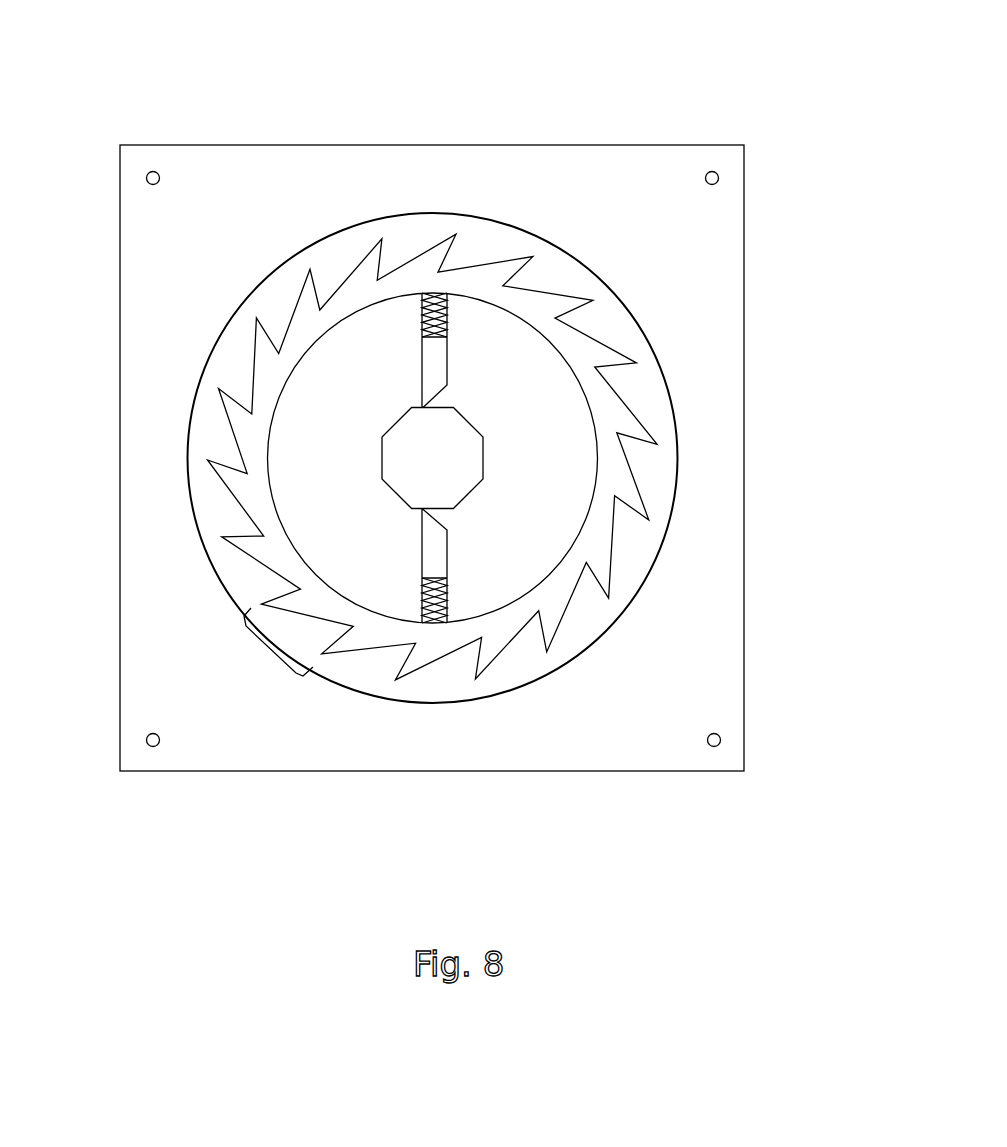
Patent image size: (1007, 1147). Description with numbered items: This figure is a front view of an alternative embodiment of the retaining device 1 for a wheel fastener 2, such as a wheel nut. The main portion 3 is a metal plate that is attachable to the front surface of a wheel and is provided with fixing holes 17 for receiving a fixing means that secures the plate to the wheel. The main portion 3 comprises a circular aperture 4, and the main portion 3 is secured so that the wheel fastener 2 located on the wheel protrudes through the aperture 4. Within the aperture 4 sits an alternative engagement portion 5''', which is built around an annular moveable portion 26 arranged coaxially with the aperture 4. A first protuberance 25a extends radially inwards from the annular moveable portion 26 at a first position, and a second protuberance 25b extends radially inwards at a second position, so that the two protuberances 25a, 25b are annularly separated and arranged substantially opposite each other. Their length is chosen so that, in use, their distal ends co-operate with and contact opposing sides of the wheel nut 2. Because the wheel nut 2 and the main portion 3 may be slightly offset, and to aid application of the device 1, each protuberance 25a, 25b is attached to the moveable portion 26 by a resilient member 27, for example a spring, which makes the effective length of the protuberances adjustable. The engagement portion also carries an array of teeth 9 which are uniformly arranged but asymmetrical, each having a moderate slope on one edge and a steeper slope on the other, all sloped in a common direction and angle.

The retaining device 1 is at (474, 437).
The wheel fastener 2 is at (447, 455).
The main portion 3 is at (470, 175).
The circular aperture 4 is at (213, 508).
The alternative engagement portion 5''' is at (402, 337).
The teeth 9 is at (268, 657).
The fixing holes 17 is at (148, 172).
The first protuberance 25a is at (437, 543).
The second protuberance 25b is at (437, 353).
The annular moveable portion 26 is at (666, 418).
The resilient member 27 is at (436, 295).